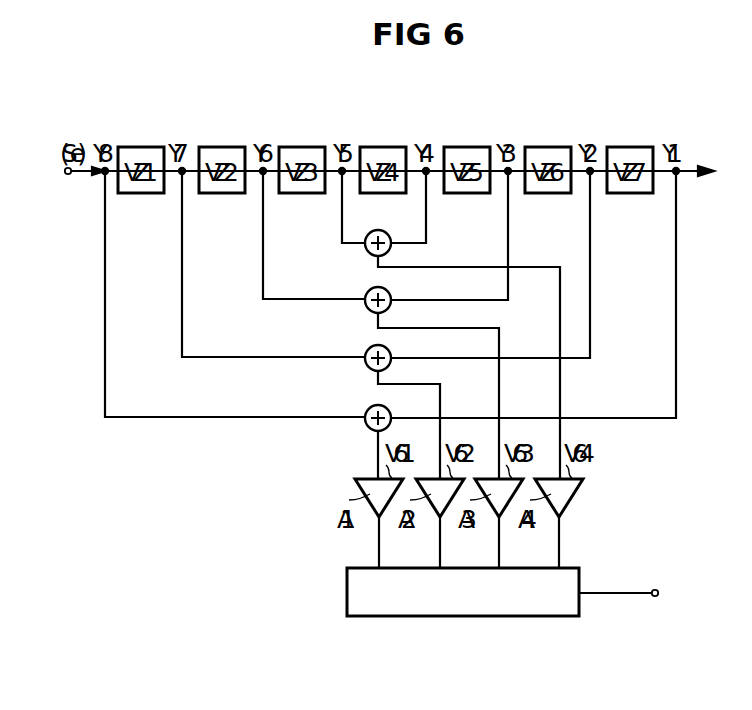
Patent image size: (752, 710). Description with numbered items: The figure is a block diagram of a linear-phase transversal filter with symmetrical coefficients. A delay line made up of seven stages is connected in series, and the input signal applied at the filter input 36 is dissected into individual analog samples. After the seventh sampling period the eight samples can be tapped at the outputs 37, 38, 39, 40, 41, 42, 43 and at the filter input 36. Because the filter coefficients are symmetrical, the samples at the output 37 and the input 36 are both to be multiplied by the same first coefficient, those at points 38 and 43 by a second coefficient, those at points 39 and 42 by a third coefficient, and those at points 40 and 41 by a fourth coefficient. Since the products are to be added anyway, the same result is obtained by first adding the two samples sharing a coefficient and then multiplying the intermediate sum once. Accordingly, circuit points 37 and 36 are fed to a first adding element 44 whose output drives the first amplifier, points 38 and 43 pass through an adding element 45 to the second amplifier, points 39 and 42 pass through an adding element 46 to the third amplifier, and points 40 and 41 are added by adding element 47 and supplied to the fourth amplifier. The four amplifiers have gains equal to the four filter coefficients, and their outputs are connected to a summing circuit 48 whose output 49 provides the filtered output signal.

The filter input 36 is at (72, 188).
The output 37 is at (679, 176).
The output 38 is at (588, 176).
The output 39 is at (506, 176).
The output 40 is at (424, 176).
The output 41 is at (343, 176).
The output 42 is at (264, 176).
The output 43 is at (183, 176).
The first adding element 44 is at (368, 427).
The adding element 45 is at (368, 367).
The adding element 46 is at (368, 309).
The adding element 47 is at (368, 252).
The summing circuit 48 is at (420, 606).
The output 49 is at (639, 577).